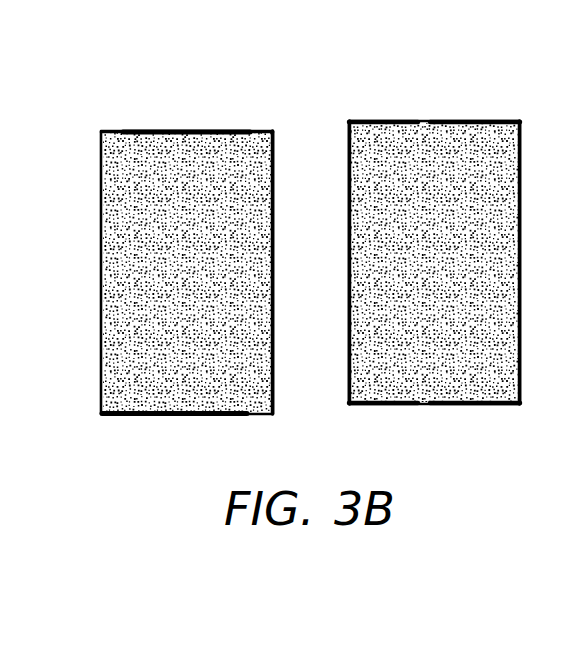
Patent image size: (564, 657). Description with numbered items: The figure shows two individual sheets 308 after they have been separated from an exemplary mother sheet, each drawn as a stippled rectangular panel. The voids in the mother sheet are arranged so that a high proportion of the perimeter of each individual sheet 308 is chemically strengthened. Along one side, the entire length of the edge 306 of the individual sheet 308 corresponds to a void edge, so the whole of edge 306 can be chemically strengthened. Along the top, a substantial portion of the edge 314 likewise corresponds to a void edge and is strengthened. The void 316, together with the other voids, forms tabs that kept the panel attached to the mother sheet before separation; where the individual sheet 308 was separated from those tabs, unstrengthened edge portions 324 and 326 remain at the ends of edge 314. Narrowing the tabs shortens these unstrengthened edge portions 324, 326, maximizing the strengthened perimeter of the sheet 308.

The edge 306 is at (100, 266).
The individual sheet 308 is at (173, 372).
The edge 314 is at (165, 130).
The void 316 is at (28, 186).
The unstrengthened edge portion 324 is at (120, 130).
The unstrengthened edge portion 326 is at (256, 130).